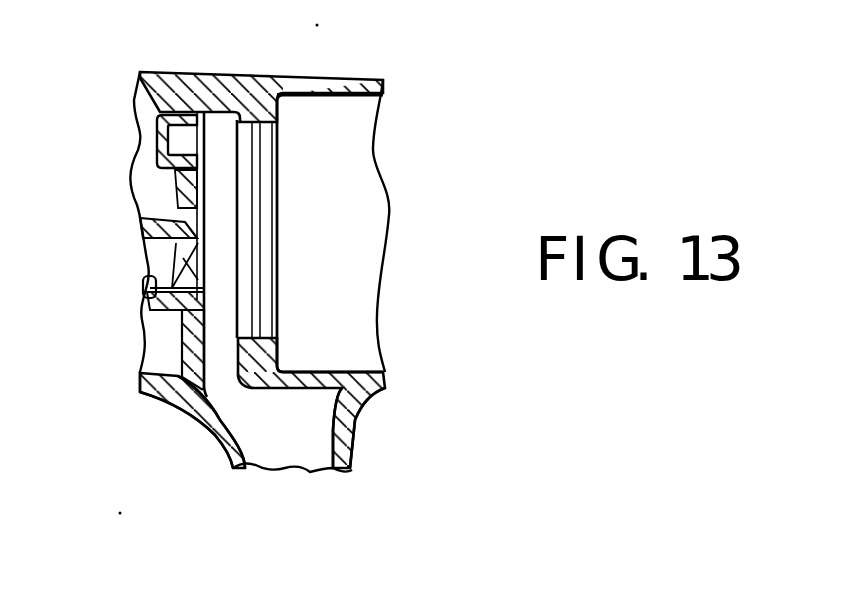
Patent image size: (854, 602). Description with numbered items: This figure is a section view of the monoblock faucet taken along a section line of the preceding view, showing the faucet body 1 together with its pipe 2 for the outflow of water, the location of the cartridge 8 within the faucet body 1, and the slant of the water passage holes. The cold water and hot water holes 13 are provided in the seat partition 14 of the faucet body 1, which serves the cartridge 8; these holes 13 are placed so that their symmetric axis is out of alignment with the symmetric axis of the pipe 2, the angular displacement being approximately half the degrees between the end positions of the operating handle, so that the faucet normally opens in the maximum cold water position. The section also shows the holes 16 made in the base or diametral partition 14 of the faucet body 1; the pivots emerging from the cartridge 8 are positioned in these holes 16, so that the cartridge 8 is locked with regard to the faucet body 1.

The faucet body 1 is at (171, 88).
The pipe 2 is at (275, 440).
The cartridge 8 is at (355, 167).
The cold water and hot water holes 13 is at (150, 290).
The seat partition 14 is at (197, 210).
The holes 16 is at (163, 143).